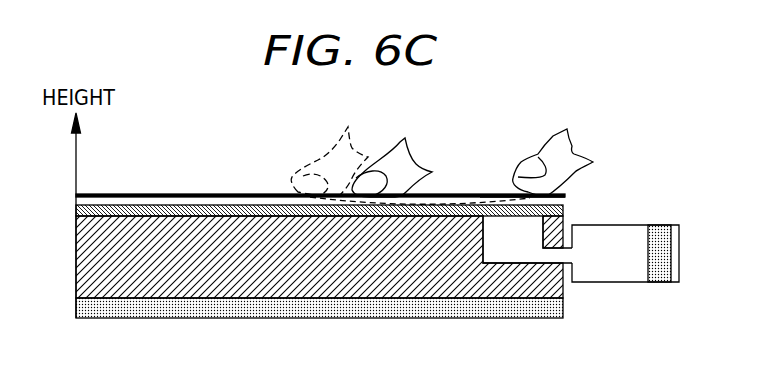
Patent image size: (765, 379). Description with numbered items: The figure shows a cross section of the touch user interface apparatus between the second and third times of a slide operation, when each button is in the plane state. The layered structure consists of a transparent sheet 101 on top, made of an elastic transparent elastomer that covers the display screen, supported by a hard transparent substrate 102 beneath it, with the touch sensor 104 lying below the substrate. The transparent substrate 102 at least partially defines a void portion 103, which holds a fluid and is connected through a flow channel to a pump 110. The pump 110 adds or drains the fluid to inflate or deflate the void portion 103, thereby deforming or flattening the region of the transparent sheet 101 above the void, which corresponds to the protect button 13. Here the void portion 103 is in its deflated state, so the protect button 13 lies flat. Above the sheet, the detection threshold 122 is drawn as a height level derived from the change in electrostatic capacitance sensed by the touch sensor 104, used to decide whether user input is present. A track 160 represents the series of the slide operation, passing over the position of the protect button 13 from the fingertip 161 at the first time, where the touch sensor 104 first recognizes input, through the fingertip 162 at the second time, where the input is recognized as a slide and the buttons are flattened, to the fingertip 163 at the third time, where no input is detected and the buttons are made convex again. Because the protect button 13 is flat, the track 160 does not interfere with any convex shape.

The protect button 13 is at (505, 198).
The transparent sheet 101 is at (77, 213).
The transparent substrate 102 is at (87, 242).
The void portion 103 is at (513, 247).
The touch sensor 104 is at (77, 310).
The pump 110 is at (639, 225).
The detection threshold 122 is at (152, 193).
The track 160 is at (453, 202).
The fingertip 161 is at (333, 143).
The fingertip 162 is at (395, 153).
The fingertip 163 is at (581, 146).